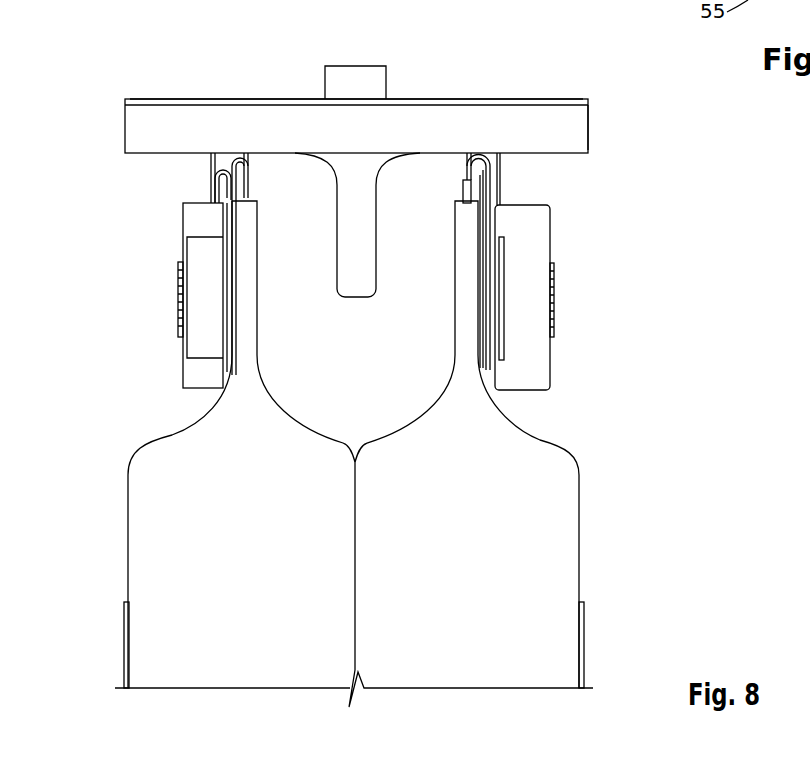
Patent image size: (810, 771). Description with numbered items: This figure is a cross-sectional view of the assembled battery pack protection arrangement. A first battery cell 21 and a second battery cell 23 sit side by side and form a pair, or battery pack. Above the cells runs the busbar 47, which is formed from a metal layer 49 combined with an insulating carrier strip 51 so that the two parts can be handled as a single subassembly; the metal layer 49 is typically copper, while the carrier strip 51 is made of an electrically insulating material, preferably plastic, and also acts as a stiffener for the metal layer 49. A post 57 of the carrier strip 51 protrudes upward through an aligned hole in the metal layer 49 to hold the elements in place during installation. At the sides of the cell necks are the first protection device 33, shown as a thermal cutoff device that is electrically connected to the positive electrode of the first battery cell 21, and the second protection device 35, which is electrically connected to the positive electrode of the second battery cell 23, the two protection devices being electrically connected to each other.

The first battery cell 21 is at (482, 561).
The second battery cell 23 is at (256, 561).
The first protection device 33 is at (538, 365).
The second protection device 35 is at (198, 341).
The busbar 47 is at (125, 130).
The metal layer 49 is at (560, 99).
The insulating carrier strip 51 is at (580, 133).
The post 57 is at (357, 66).